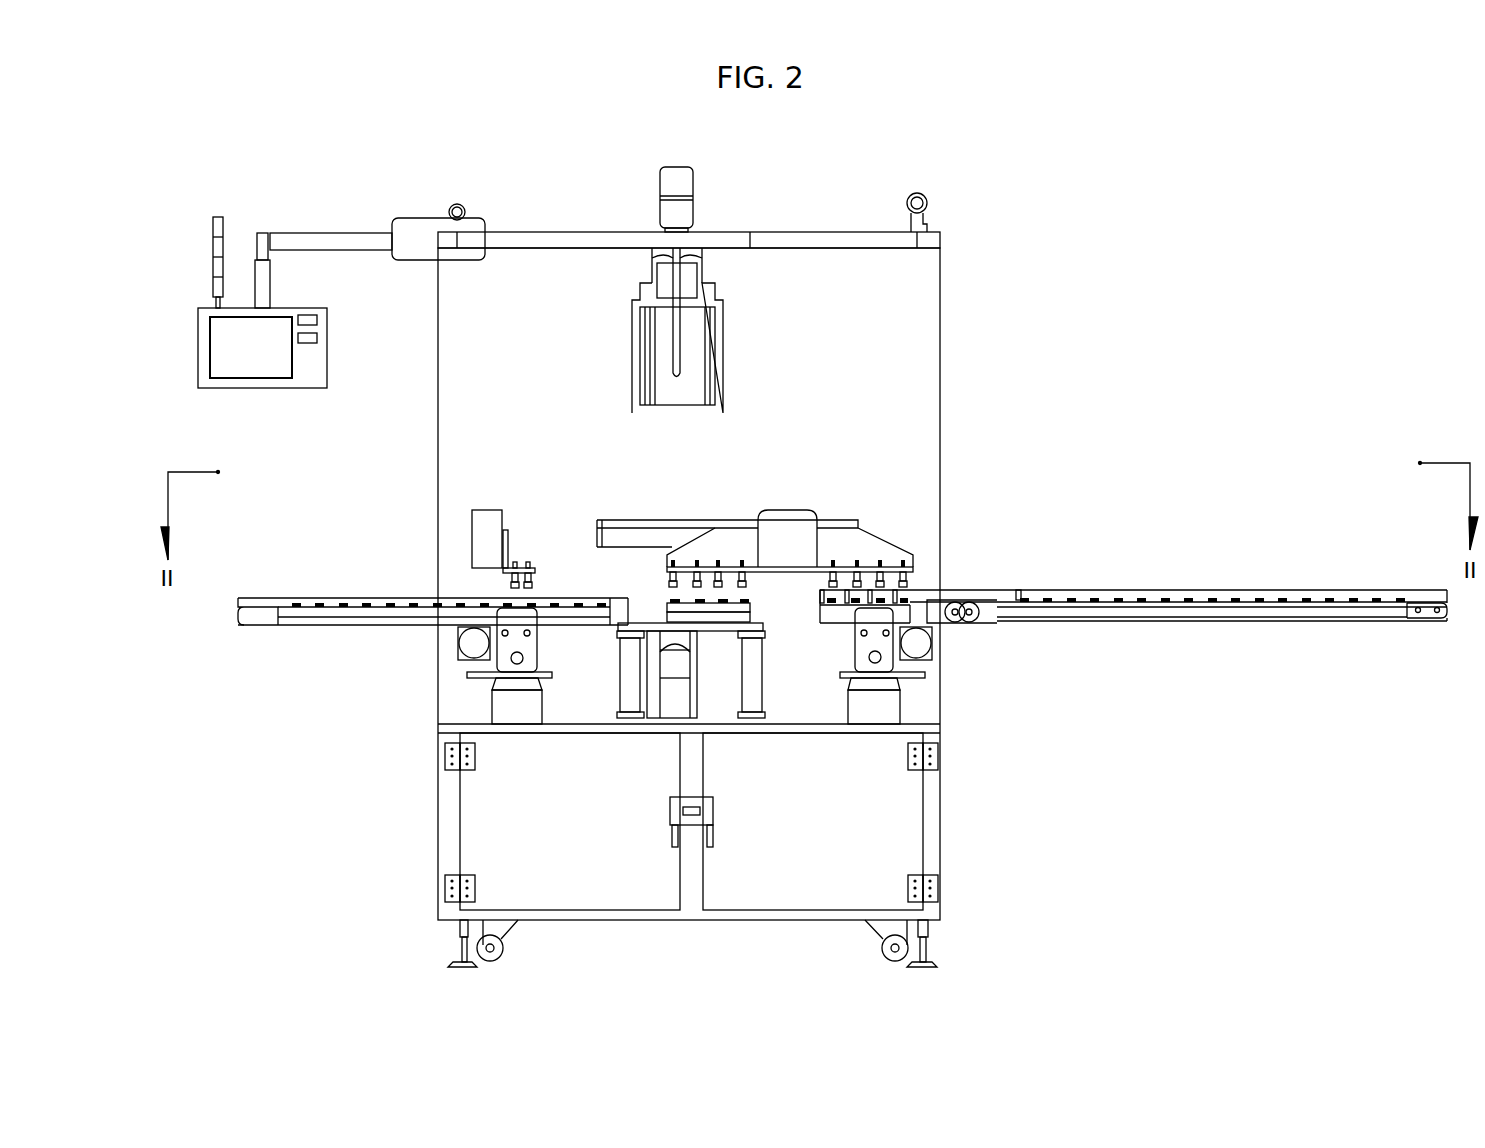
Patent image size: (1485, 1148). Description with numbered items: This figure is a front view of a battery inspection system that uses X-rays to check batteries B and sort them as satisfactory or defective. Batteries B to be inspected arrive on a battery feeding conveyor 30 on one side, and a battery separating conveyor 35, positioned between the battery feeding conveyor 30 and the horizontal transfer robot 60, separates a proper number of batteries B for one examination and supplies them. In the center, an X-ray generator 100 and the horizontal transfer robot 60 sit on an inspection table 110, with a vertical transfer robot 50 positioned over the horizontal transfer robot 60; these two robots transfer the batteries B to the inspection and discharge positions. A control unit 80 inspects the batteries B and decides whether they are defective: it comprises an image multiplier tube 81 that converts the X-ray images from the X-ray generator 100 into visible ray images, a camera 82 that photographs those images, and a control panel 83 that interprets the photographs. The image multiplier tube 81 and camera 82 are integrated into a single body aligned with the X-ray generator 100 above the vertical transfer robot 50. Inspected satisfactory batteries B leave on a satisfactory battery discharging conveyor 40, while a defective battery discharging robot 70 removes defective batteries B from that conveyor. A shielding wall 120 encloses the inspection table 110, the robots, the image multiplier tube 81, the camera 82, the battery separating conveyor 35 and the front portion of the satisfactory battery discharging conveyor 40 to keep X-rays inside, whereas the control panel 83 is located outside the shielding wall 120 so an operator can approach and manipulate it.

The battery feeding conveyor 30 is at (1223, 602).
The battery separating conveyor 35 is at (945, 625).
The satisfactory battery discharging conveyor 40 is at (287, 598).
The vertical transfer robot 50 is at (837, 519).
The horizontal transfer robot 60 is at (751, 614).
The defective battery discharging robot 70 is at (487, 512).
The control unit 80 is at (392, 153).
The image multiplier tube 81 is at (632, 348).
The camera 82 is at (653, 281).
The control panel 83 is at (300, 308).
The X-ray generator 100 is at (693, 648).
The inspection table 110 is at (922, 724).
The shielding wall 120 is at (940, 352).
The batteries B is at (362, 603).